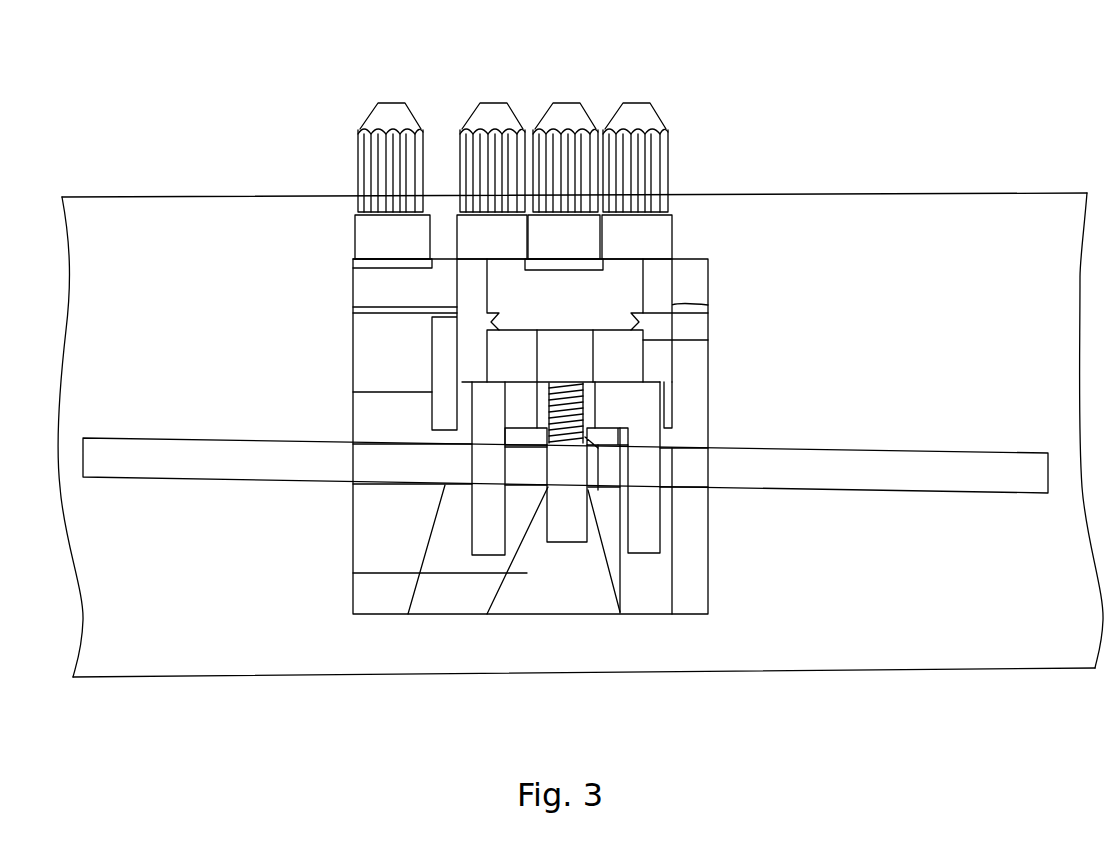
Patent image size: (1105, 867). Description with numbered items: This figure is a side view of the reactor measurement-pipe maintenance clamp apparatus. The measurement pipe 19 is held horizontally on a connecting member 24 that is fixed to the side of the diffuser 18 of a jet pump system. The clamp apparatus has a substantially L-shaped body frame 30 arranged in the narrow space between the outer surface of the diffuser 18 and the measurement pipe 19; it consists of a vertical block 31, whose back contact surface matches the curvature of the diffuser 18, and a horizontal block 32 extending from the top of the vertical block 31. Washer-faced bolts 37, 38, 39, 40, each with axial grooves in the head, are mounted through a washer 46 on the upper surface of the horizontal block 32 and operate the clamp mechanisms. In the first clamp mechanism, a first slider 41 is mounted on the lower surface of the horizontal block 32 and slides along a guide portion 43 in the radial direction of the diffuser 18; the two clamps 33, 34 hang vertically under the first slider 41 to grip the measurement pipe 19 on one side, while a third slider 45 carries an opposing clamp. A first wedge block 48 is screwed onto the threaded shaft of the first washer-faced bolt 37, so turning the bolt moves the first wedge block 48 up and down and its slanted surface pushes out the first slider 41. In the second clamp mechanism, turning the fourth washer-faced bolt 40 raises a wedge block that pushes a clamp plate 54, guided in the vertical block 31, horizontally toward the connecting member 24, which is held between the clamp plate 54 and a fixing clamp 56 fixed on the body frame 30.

The diffuser 18 is at (305, 662).
The measurement pipe 19 is at (213, 467).
The connecting member 24 is at (565, 523).
The body frame 30 is at (655, 587).
The vertical block 31 is at (695, 510).
The horizontal block 32 is at (687, 273).
The clamp 33 is at (662, 520).
The clamp 34 is at (492, 542).
The first washer-faced bolt 37 is at (563, 103).
The washer-faced bolt 38 is at (637, 103).
The washer-faced bolt 39 is at (493, 103).
The fourth washer-faced bolt 40 is at (388, 103).
The first slider 41 is at (655, 367).
The guide portion 43 is at (490, 318).
The third slider 45 is at (440, 363).
The washer 46 is at (358, 242).
The first wedge block 48 is at (578, 358).
The clamp plate 54 is at (443, 553).
The fixing clamp 56 is at (608, 540).